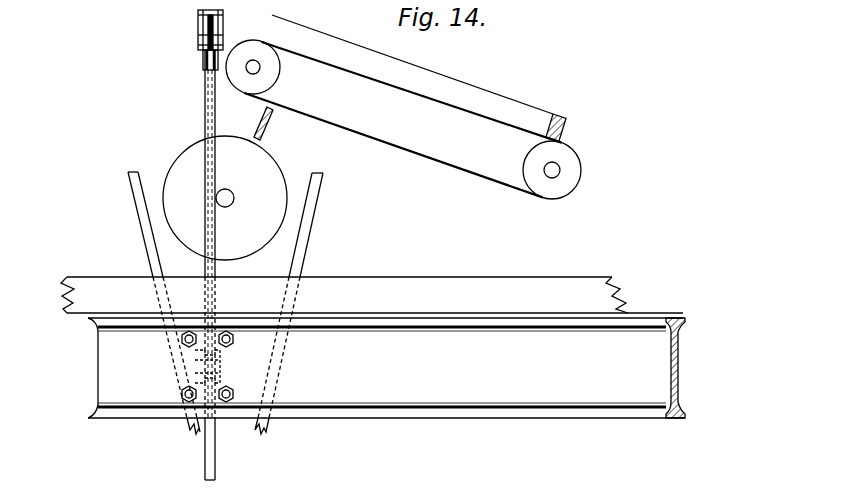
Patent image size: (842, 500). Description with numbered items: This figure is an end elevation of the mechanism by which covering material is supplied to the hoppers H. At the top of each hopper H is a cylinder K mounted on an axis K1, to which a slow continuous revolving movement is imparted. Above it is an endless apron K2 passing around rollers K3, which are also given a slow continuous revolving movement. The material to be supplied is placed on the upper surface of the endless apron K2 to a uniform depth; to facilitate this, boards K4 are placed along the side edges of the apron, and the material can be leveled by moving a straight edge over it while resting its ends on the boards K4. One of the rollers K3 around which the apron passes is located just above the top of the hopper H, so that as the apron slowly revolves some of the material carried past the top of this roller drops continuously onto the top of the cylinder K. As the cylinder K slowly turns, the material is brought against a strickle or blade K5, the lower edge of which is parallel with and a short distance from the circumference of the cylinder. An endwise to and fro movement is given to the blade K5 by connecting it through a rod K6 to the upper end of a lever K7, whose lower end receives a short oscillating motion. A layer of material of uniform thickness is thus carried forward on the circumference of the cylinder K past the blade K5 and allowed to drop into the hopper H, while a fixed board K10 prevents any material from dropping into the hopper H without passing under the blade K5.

The cylinder K is at (225, 198).
The axis K1 is at (228, 196).
The endless apron K2 is at (432, 99).
The rollers K3 is at (291, 74).
The boards K4 is at (467, 88).
The strickle or blade K5 is at (205, 112).
The rod K6 is at (222, 33).
The lever K7 is at (207, 119).
The fixed board K10 is at (270, 128).
The hopper H is at (310, 228).